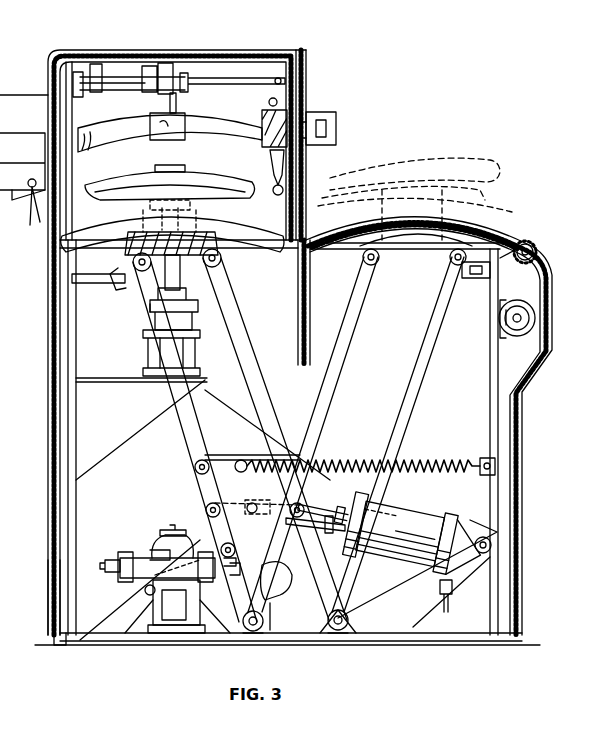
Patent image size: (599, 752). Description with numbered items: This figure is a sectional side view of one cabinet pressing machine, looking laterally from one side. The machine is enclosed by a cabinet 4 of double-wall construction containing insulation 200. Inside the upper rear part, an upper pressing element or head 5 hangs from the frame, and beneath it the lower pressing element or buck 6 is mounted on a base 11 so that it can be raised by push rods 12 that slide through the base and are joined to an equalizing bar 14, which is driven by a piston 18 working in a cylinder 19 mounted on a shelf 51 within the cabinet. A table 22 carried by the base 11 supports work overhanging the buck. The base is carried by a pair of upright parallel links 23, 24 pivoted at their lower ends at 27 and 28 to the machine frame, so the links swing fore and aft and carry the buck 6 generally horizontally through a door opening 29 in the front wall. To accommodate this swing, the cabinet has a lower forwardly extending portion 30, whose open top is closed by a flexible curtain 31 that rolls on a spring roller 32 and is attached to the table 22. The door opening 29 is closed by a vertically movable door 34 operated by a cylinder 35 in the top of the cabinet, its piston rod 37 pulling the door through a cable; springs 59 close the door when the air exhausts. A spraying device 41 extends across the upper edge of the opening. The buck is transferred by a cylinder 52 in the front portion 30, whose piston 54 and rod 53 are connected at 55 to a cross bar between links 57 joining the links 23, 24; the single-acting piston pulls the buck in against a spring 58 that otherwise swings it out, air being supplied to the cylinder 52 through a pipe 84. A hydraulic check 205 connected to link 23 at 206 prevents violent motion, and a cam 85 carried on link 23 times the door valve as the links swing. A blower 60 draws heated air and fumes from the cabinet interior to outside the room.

The cabinet 4 is at (98, 54).
The upper pressing element 5 is at (134, 118).
The lower pressing element 6 is at (230, 178).
The base 11 is at (222, 256).
The push rods 12 is at (170, 262).
The equalizing bar 14 is at (188, 310).
The piston 18 is at (198, 354).
The cylinder 19 is at (143, 352).
The table 22 is at (250, 226).
The link 23 is at (136, 294).
The link 24 is at (234, 296).
The pivot 27 is at (252, 633).
The pivot 28 is at (338, 631).
The door opening 29 is at (312, 159).
The lower forwardly extending portion 30 is at (491, 367).
The flexible curtain 31 is at (520, 232).
The spring roller 32 is at (504, 310).
The door 34 is at (312, 194).
The cylinder 35 is at (132, 74).
The piston rod 37 is at (212, 83).
The spraying device 41 is at (324, 113).
The shelf 51 is at (126, 432).
The cylinder 52 is at (398, 556).
The rod 53 is at (316, 522).
The piston 54 is at (398, 512).
The connection 55 is at (252, 510).
The links 57 is at (236, 518).
The spring 58 is at (346, 461).
The springs 59 is at (312, 292).
The blower 60 is at (24, 138).
The pipe 84 is at (446, 590).
The cam 85 is at (262, 583).
The insulation 200 is at (58, 605).
The hydraulic check 205 is at (152, 549).
The connection 206 is at (226, 543).